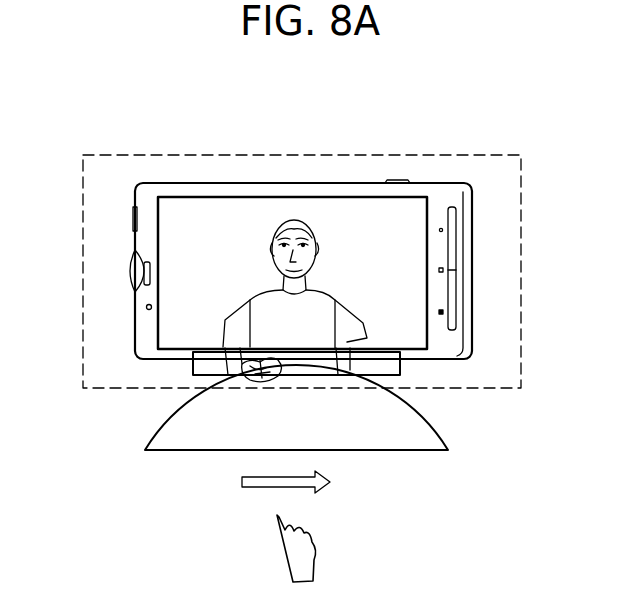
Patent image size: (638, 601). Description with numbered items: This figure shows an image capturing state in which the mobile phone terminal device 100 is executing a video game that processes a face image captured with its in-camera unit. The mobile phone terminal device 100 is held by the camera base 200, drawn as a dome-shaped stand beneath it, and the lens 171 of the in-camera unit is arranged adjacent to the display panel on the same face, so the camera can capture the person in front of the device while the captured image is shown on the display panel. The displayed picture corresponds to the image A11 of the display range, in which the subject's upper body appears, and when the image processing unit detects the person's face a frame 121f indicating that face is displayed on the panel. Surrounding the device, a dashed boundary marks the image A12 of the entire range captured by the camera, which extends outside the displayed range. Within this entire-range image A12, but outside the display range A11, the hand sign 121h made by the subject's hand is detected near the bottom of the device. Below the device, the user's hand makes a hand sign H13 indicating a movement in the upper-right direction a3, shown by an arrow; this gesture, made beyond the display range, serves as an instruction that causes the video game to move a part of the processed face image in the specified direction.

The image of a display range A11 is at (264, 269).
The image of an entire range A12 is at (522, 271).
The mobile phone terminal device 100 is at (457, 347).
The lens 171 is at (146, 307).
The frame 121f is at (318, 243).
The hand sign 121h is at (240, 366).
The camera base 200 is at (432, 413).
The upper-right direction a3 is at (300, 487).
The hand sign H13 is at (316, 548).